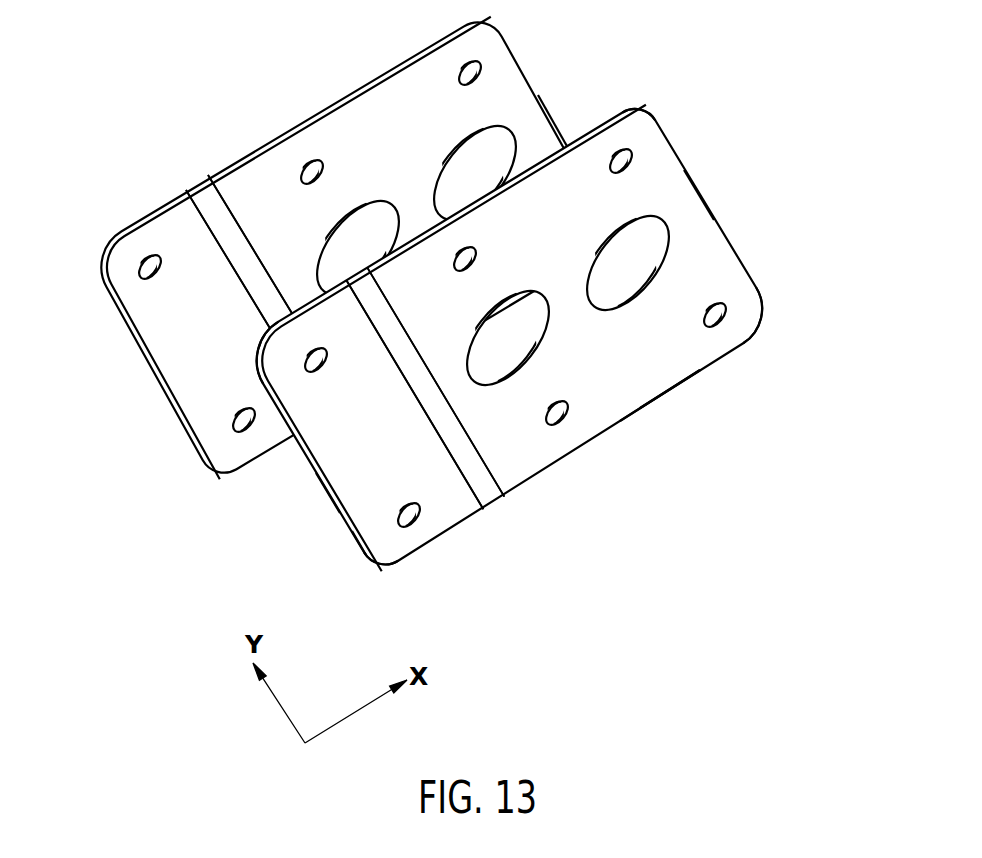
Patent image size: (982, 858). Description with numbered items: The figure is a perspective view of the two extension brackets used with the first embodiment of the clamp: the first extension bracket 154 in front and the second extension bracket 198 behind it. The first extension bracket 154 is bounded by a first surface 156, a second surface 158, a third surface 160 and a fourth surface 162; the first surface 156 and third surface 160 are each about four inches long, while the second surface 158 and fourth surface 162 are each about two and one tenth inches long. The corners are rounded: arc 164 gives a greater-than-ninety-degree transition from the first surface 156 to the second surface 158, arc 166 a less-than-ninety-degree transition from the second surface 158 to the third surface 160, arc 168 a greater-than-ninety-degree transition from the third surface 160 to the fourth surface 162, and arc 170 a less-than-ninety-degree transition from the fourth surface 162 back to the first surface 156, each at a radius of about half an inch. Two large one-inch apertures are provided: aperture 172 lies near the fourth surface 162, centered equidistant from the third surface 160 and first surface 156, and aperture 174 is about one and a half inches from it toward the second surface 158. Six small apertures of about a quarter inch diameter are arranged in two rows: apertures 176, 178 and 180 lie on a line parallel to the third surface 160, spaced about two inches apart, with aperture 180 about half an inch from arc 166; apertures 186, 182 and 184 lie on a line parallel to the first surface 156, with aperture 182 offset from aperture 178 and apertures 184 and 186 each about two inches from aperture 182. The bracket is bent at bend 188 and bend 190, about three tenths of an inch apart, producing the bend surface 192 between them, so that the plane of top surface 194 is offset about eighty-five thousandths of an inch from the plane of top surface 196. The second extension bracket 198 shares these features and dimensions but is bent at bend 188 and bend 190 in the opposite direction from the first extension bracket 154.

The first extension bracket 154 is at (615, 533).
The first surface 156 is at (653, 402).
The second surface 158 is at (328, 495).
The third surface 160 is at (545, 148).
The fourth surface 162 is at (705, 196).
The arc 164 is at (383, 570).
The arc 166 is at (272, 362).
The arc 168 is at (634, 105).
The arc 170 is at (756, 309).
The aperture 172 is at (466, 173).
The aperture 174 is at (392, 228).
The aperture 176 is at (485, 75).
The aperture 178 is at (326, 166).
The aperture 180 is at (162, 278).
The aperture 182 is at (567, 419).
The aperture 184 is at (254, 429).
The aperture 186 is at (724, 322).
The bend 188 is at (203, 183).
The bend 190 is at (190, 193).
The bend surface 192 is at (247, 268).
The top surface 194 is at (365, 541).
The top surface 196 is at (663, 358).
The second extension bracket 198 is at (180, 160).